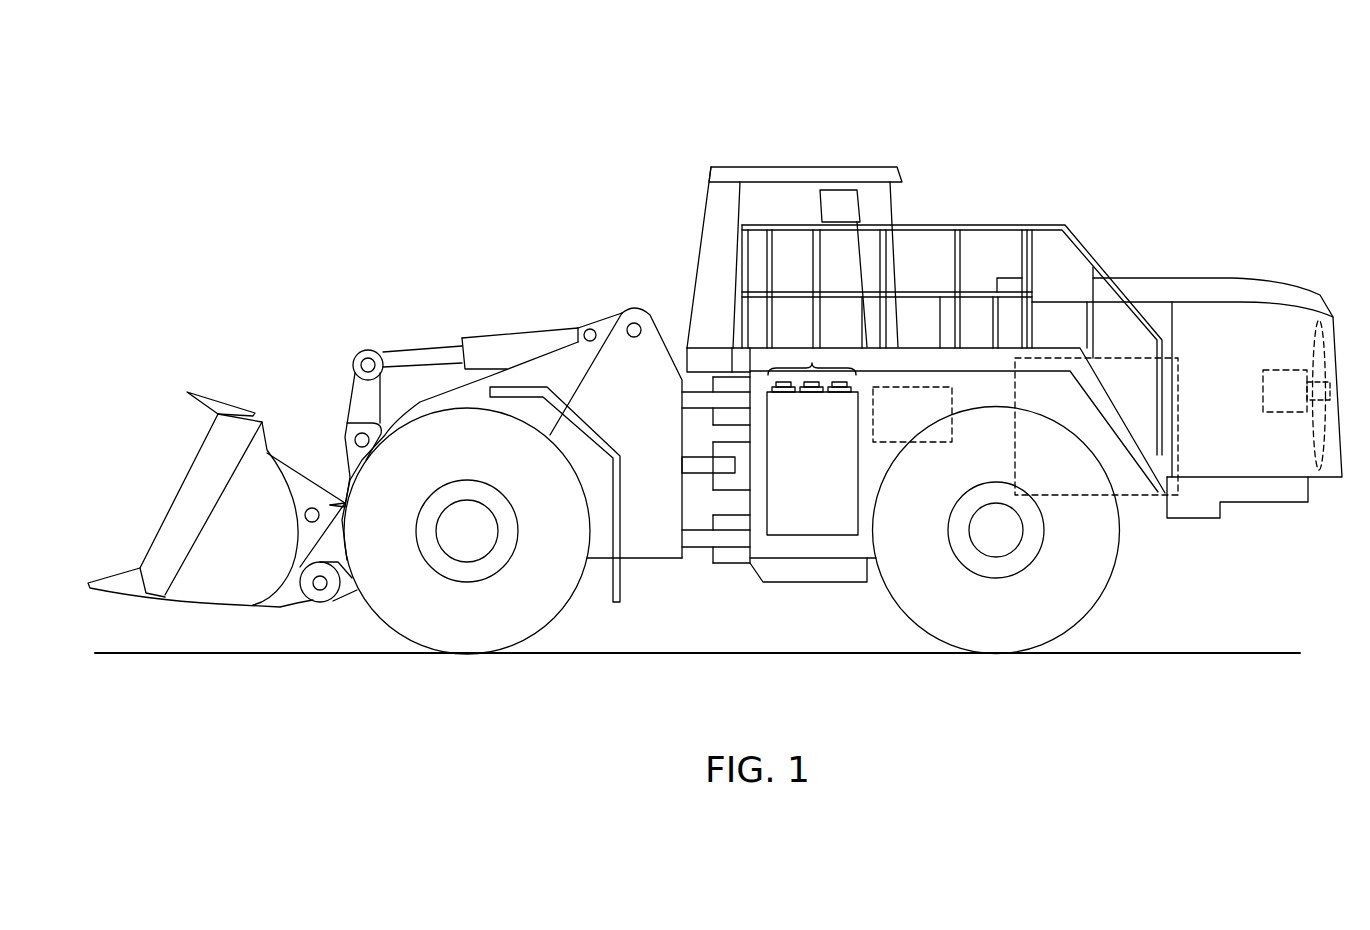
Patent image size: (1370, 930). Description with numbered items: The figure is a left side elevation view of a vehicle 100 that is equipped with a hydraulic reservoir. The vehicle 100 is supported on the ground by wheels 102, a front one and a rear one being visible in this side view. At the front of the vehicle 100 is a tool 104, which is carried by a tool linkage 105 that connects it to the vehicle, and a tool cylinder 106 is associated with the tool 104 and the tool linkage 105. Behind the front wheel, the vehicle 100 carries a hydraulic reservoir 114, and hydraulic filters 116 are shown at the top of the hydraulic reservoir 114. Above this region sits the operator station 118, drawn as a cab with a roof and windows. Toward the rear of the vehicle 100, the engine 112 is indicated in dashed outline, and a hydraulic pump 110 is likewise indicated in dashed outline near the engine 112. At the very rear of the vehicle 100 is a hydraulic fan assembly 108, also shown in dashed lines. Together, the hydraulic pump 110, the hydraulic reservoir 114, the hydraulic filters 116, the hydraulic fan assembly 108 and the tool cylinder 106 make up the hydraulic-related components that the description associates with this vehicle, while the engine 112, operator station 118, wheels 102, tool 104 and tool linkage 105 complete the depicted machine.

The vehicle 100 is at (285, 108).
The wheels 102 is at (495, 602).
The tool 104 is at (240, 532).
The tool linkage 105 is at (330, 338).
The tool cylinder 106 is at (427, 355).
The hydraulic fan assembly 108 is at (1308, 333).
The hydraulic pump 110 is at (945, 442).
The engine 112 is at (1067, 498).
The hydraulic reservoir 114 is at (782, 543).
The hydraulic filters 116 is at (813, 367).
The operator station 118 is at (700, 175).